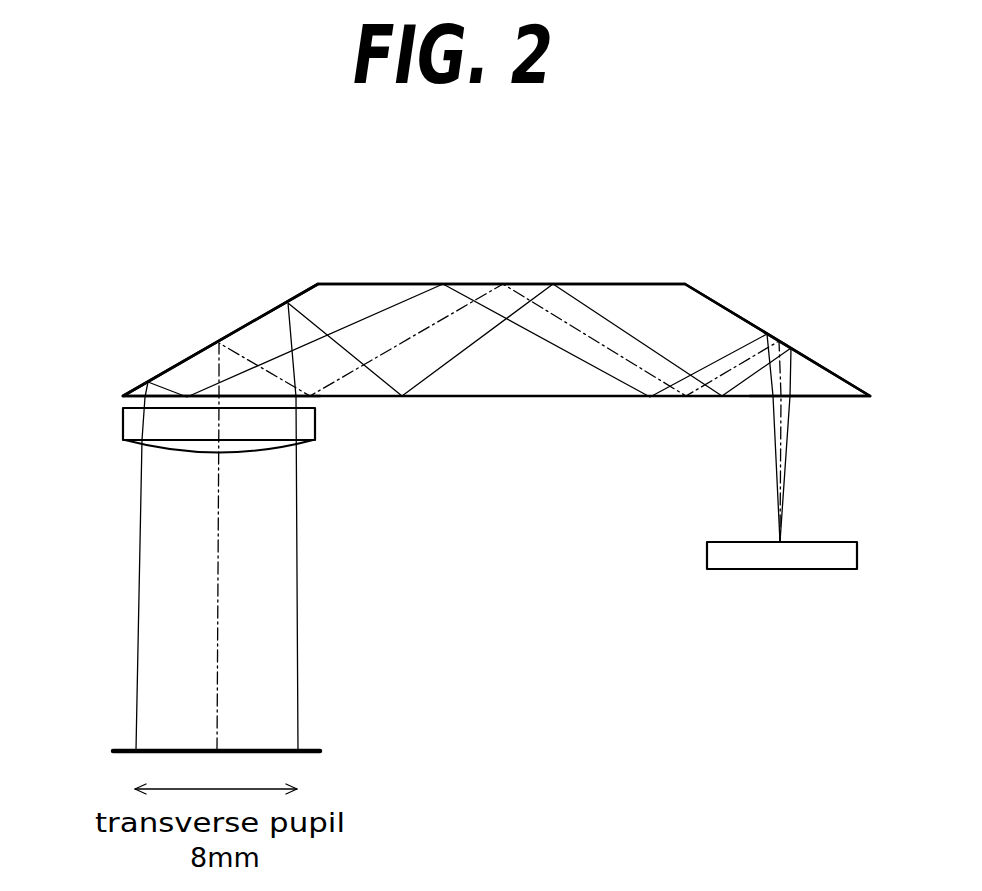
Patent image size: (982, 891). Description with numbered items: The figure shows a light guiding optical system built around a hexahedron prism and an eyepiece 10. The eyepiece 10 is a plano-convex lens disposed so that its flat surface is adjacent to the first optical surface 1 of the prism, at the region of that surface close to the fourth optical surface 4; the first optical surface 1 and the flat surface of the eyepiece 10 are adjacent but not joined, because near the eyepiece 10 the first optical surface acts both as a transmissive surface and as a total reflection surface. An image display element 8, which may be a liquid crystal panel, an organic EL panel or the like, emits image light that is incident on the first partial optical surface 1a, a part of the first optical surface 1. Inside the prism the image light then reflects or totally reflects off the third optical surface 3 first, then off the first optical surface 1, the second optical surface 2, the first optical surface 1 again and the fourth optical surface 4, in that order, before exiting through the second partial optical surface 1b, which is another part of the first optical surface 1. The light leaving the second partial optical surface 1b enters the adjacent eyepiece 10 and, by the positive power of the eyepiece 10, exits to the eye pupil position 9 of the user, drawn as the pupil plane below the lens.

The first optical surface 1 is at (532, 398).
The first partial optical surface 1a is at (812, 398).
The second partial optical surface 1b is at (250, 402).
The second optical surface 2 is at (613, 283).
The third optical surface 3 is at (738, 315).
The fourth optical surface 4 is at (257, 317).
The image display element 8 is at (795, 569).
The eye pupil position 9 is at (127, 750).
The eyepiece 10 is at (123, 422).